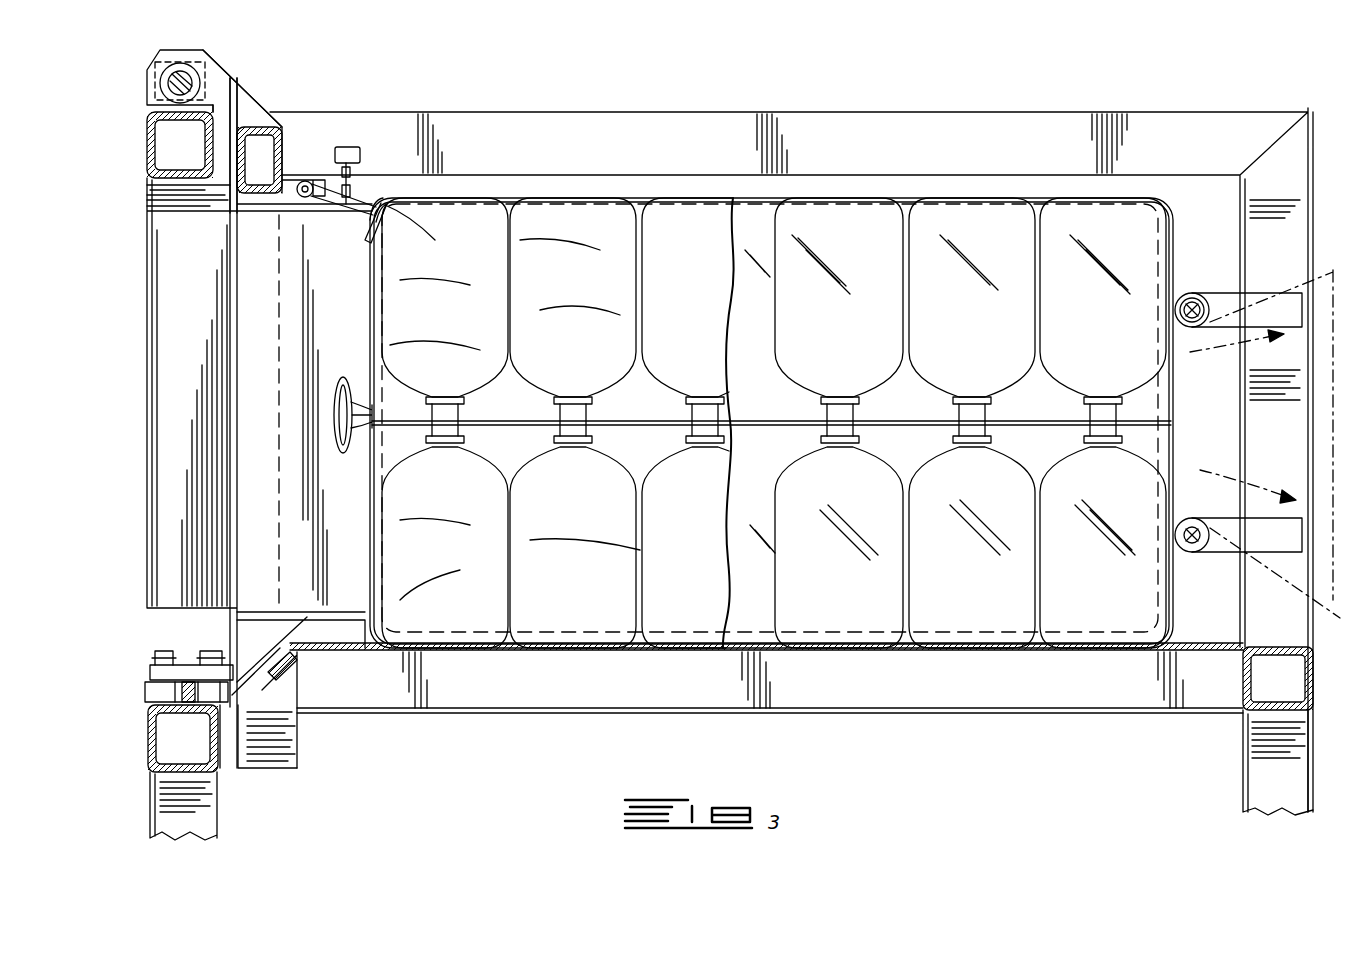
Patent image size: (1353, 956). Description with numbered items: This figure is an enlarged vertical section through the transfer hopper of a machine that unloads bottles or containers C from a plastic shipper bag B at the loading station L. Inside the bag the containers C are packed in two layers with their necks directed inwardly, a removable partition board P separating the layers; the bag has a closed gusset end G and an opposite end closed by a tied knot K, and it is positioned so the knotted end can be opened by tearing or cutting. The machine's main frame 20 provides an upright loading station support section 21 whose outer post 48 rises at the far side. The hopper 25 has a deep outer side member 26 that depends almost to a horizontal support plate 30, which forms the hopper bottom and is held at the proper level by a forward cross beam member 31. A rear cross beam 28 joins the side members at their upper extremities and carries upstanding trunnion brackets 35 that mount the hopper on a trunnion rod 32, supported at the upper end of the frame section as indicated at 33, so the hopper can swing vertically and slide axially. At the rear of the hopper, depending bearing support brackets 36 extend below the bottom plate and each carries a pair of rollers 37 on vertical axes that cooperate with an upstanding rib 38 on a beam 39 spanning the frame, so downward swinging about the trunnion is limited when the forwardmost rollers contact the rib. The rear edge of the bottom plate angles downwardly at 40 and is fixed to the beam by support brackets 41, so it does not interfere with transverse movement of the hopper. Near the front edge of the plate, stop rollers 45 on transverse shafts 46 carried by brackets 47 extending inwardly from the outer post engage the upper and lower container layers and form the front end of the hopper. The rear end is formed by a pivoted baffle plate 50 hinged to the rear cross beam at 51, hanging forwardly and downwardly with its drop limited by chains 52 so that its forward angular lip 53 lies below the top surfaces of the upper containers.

The main frame 20 is at (150, 802).
The loading station support section 21 is at (1000, 112).
The hopper 25 is at (238, 256).
The outer side member 26 is at (1176, 382).
The rear cross beam 28 is at (258, 130).
The horizontal support plate 30 is at (795, 652).
The forward cross beam member 31 is at (1243, 695).
The trunnion rod 32 is at (183, 78).
The trunnion rod support 33 is at (148, 72).
The trunnion brackets 35 is at (222, 66).
The bearing support brackets 36 is at (295, 624).
The rollers 37 is at (145, 695).
The upstanding rib 38 is at (170, 676).
The beam 39 is at (150, 740).
The downwardly angled rear edge 40 is at (290, 664).
The support brackets 41 is at (250, 760).
The stop rollers 45 is at (1190, 296).
The transverse shafts 46 is at (1202, 298).
The brackets 47 is at (1254, 306).
The outer post 48 is at (1245, 212).
The pivoted baffle plate 50 is at (384, 200).
The hinge 51 is at (306, 181).
The chains 52 is at (352, 170).
The forward angular lip 53 is at (364, 232).
The plastic shipper bag B is at (1172, 212).
The containers C is at (940, 210).
The closed gusset end G is at (1178, 424).
The tied knot K is at (348, 394).
The loading station L is at (1203, 630).
The partition board P is at (882, 428).